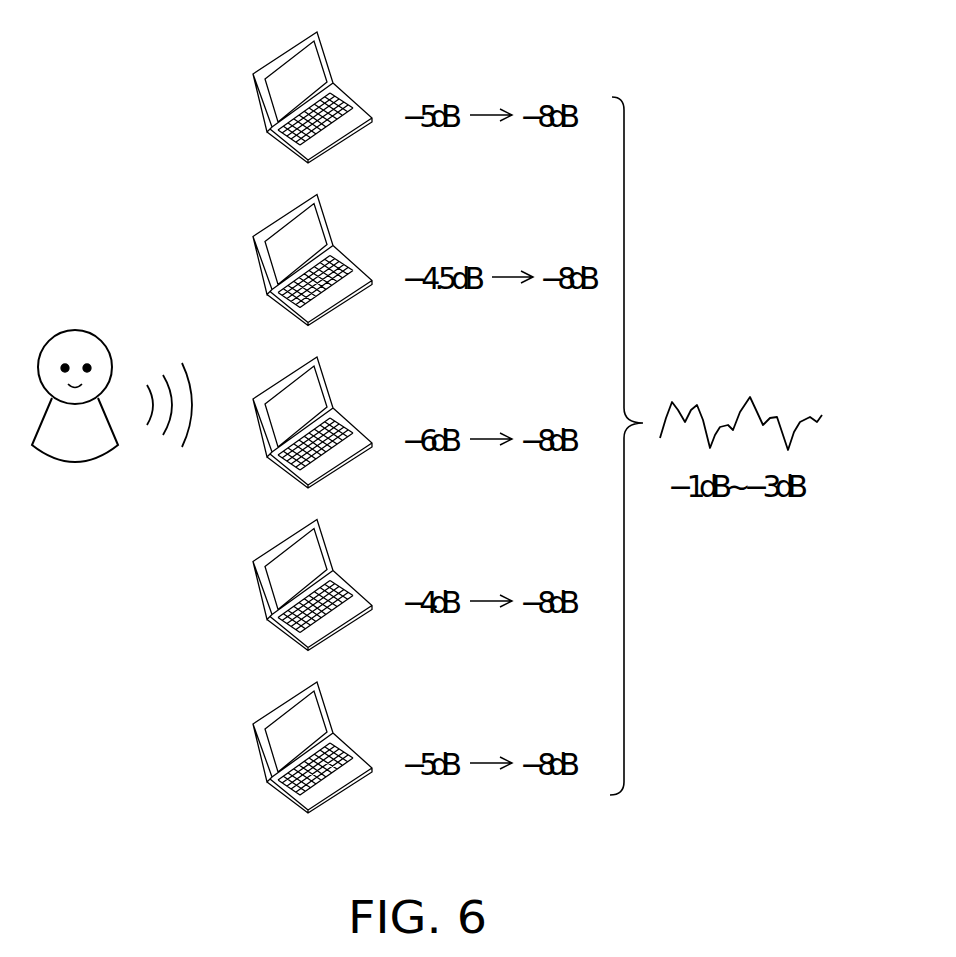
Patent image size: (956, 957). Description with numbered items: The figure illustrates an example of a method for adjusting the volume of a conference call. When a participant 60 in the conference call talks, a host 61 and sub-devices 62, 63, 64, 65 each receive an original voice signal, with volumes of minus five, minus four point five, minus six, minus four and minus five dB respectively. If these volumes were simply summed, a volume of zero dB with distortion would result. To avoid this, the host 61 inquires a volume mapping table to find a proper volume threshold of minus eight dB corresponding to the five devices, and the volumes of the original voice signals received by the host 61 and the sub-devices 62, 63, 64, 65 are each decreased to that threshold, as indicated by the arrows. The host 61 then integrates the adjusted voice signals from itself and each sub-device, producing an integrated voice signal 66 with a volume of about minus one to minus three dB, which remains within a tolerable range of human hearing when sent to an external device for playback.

The participant 60 is at (75, 330).
The host 61 is at (298, 83).
The sub-device 62 is at (298, 246).
The sub-device 63 is at (283, 373).
The sub-device 64 is at (298, 571).
The sub-device 65 is at (298, 733).
The integrated voice signal 66 is at (805, 415).